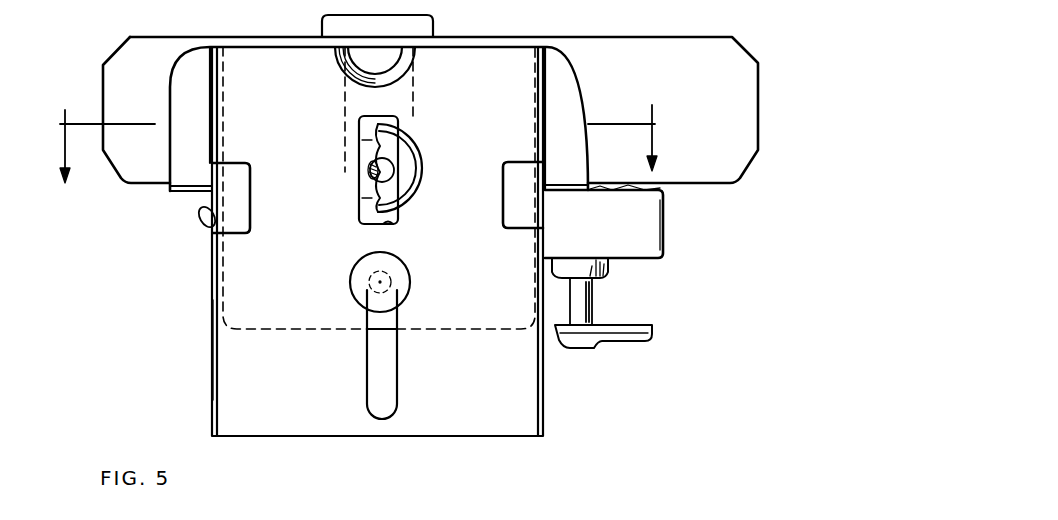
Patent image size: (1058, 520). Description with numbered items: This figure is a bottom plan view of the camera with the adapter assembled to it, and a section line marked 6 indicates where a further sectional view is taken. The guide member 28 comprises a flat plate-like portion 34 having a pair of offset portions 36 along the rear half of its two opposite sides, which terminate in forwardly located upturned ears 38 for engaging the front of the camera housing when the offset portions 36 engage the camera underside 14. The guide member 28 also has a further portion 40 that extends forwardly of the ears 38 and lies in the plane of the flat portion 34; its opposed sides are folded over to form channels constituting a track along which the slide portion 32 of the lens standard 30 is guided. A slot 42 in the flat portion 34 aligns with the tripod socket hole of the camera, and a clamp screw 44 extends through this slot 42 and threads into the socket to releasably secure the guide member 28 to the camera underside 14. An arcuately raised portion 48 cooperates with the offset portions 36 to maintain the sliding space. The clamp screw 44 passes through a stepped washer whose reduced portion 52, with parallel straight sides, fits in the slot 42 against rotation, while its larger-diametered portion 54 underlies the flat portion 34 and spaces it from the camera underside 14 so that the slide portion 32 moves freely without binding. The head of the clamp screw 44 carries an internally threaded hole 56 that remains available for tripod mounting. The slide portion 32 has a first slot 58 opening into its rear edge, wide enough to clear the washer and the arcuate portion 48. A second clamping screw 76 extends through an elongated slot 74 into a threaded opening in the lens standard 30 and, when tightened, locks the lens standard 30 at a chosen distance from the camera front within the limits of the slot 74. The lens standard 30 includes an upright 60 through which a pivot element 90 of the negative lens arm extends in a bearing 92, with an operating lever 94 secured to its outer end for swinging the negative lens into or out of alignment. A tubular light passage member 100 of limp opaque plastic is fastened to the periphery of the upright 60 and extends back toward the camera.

The camera underside 14 is at (728, 117).
The guide member 28 is at (208, 346).
The lens standard 30 is at (655, 243).
The slide portion of the lens standard 32 is at (222, 292).
The flat plate-like portion 34 is at (510, 50).
The offset portions 36 is at (204, 113).
The upturned ears 38 is at (178, 192).
The further portion 40 is at (522, 408).
The opening or slot 42 is at (388, 222).
The clamp screw 44 is at (405, 148).
The arcuately raised portion 48 is at (417, 52).
The reduced portion of washer 52 is at (368, 146).
The larger-diametered portion of washer 54 is at (346, 174).
The internally threaded hole 56 is at (390, 176).
The first slot 58 is at (340, 104).
The upright 60 is at (611, 225).
The elongated slot 74 is at (386, 358).
The second clamping screw 76 is at (400, 284).
The pivot element 90 is at (592, 303).
The bearing 92 is at (606, 264).
The operating lever 94 is at (638, 343).
The tubular passage member 100 is at (201, 224).
The section line 6- 6 is at (353, 144).